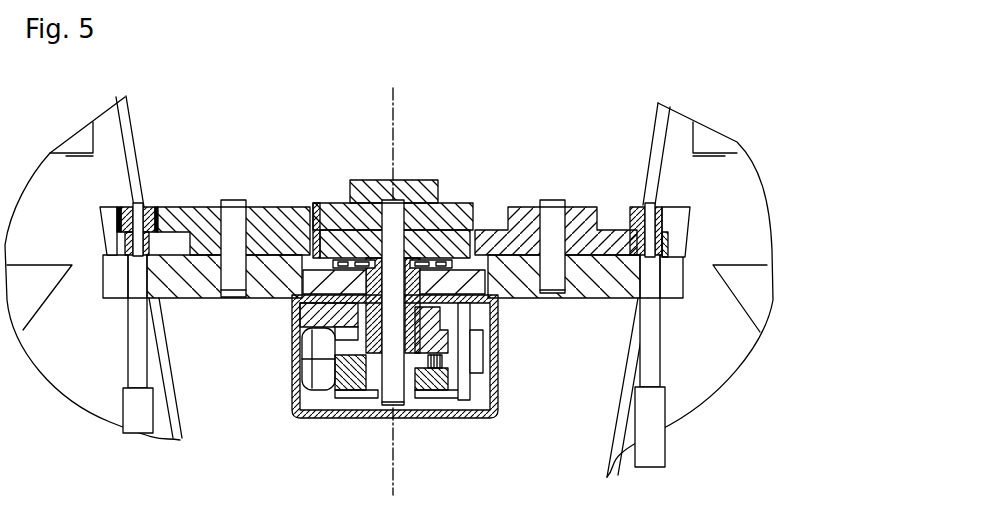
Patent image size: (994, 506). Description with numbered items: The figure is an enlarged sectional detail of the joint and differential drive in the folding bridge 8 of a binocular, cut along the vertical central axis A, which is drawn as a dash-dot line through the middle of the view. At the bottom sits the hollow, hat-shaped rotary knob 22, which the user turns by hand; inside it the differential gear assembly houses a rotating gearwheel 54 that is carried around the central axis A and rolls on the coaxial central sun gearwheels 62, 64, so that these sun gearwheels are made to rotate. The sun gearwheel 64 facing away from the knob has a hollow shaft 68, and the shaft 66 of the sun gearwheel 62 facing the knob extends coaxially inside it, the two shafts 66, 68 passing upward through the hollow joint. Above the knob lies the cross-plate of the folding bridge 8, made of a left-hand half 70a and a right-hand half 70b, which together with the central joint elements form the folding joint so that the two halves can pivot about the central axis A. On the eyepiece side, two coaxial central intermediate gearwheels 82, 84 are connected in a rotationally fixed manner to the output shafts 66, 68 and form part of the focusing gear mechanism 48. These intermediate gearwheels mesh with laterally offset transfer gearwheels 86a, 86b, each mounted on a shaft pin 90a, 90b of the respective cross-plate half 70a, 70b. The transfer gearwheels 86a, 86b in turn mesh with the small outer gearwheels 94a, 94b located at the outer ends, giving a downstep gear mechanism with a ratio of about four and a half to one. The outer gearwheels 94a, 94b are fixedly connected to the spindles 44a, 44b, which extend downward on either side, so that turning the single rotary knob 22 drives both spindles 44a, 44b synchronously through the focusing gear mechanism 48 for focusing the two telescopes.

The central axis A is at (398, 99).
The folding bridge 8 is at (511, 149).
The focusing gear mechanism 48 is at (477, 137).
The rotary knob 22 is at (447, 420).
The spindle 44a is at (127, 406).
The spindle 44b is at (665, 417).
The rotating gearwheel 54 is at (480, 354).
The sun gearwheel 62 is at (452, 378).
The sun gearwheel 64 is at (448, 338).
The shaft 66 is at (318, 370).
The hollow shaft 68 is at (302, 322).
The left-hand half of cross-plate 70a is at (188, 298).
The right-hand half of cross-plate 70b is at (590, 298).
The central intermediate gearwheel 82 is at (340, 205).
The central intermediate gearwheel 84 is at (322, 215).
The transfer gearwheel 86a is at (183, 205).
The transfer gearwheel 86b is at (588, 205).
The shaft pin 90a is at (234, 200).
The shaft pin 90b is at (553, 200).
The outer gearwheel 94a is at (121, 218).
The outer gearwheel 94b is at (672, 238).